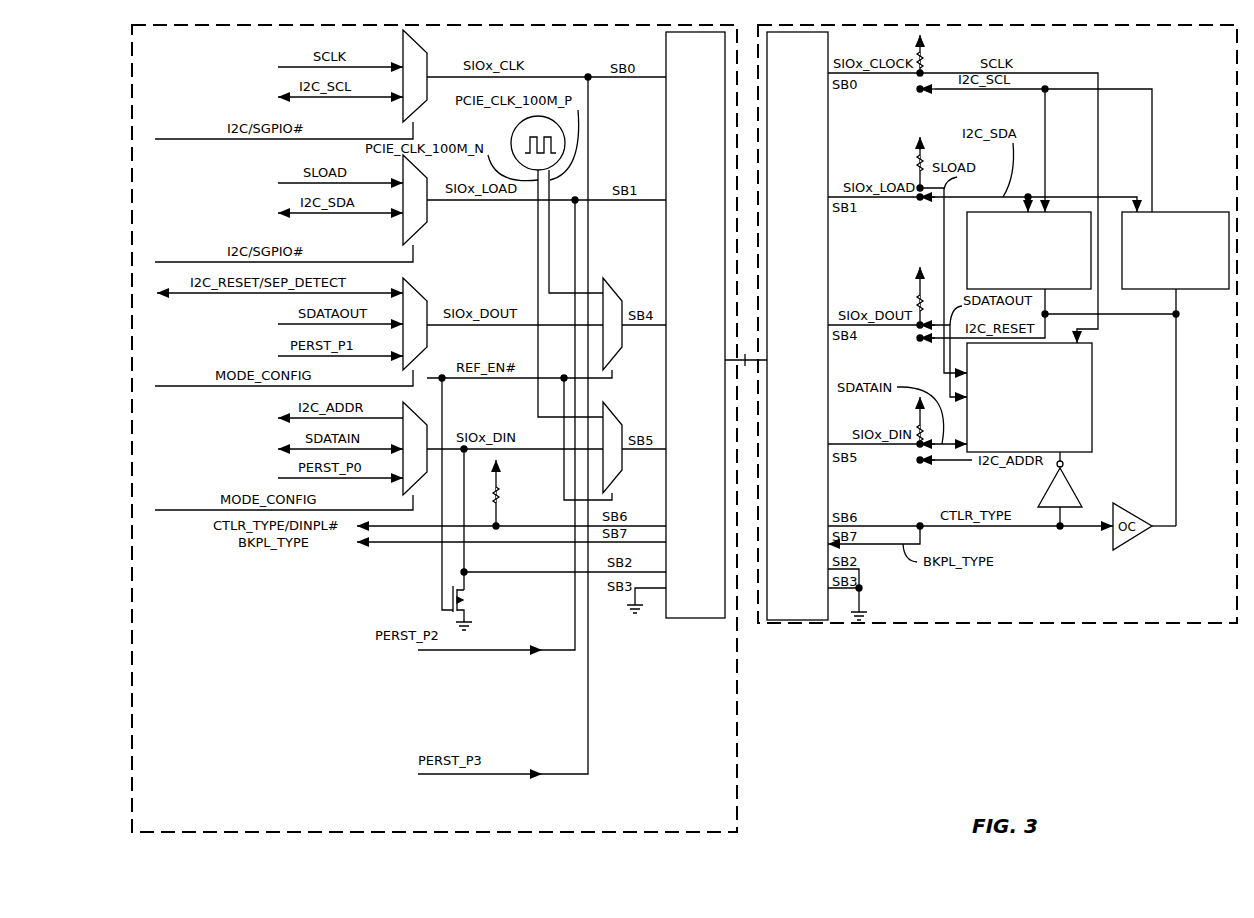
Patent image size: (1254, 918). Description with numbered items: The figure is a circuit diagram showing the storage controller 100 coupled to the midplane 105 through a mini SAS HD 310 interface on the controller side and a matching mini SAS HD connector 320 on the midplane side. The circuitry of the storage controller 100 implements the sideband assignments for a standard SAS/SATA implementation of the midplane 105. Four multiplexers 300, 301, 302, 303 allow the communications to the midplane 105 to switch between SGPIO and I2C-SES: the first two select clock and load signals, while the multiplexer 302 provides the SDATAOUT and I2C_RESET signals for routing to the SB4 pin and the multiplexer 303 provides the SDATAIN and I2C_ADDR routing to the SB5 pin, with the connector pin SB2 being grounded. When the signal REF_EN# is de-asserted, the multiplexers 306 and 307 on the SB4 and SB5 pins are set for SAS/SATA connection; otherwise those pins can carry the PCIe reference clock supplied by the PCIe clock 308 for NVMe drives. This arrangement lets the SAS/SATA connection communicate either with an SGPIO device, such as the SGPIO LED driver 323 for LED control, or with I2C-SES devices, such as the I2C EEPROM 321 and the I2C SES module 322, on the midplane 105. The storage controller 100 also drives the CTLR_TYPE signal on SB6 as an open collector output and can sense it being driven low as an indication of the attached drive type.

The storage controller 100 is at (434, 428).
The midplane 105 is at (997, 324).
The multiplexer 300 is at (425, 68).
The multiplexer 301 is at (425, 188).
The multiplexer 302 is at (425, 298).
The multiplexer 303 is at (427, 428).
The multiplexer 306 is at (624, 300).
The multiplexer 307 is at (624, 423).
The PCIe clock 308 is at (511, 145).
The mini SAS HD interface 310 is at (695, 325).
The mini SAS HD connector 320 is at (797, 326).
The I2C EEPROM 321 is at (1029, 250).
The I2C SES module 322 is at (1175, 250).
The SGPIO LED driver 323 is at (1029, 397).